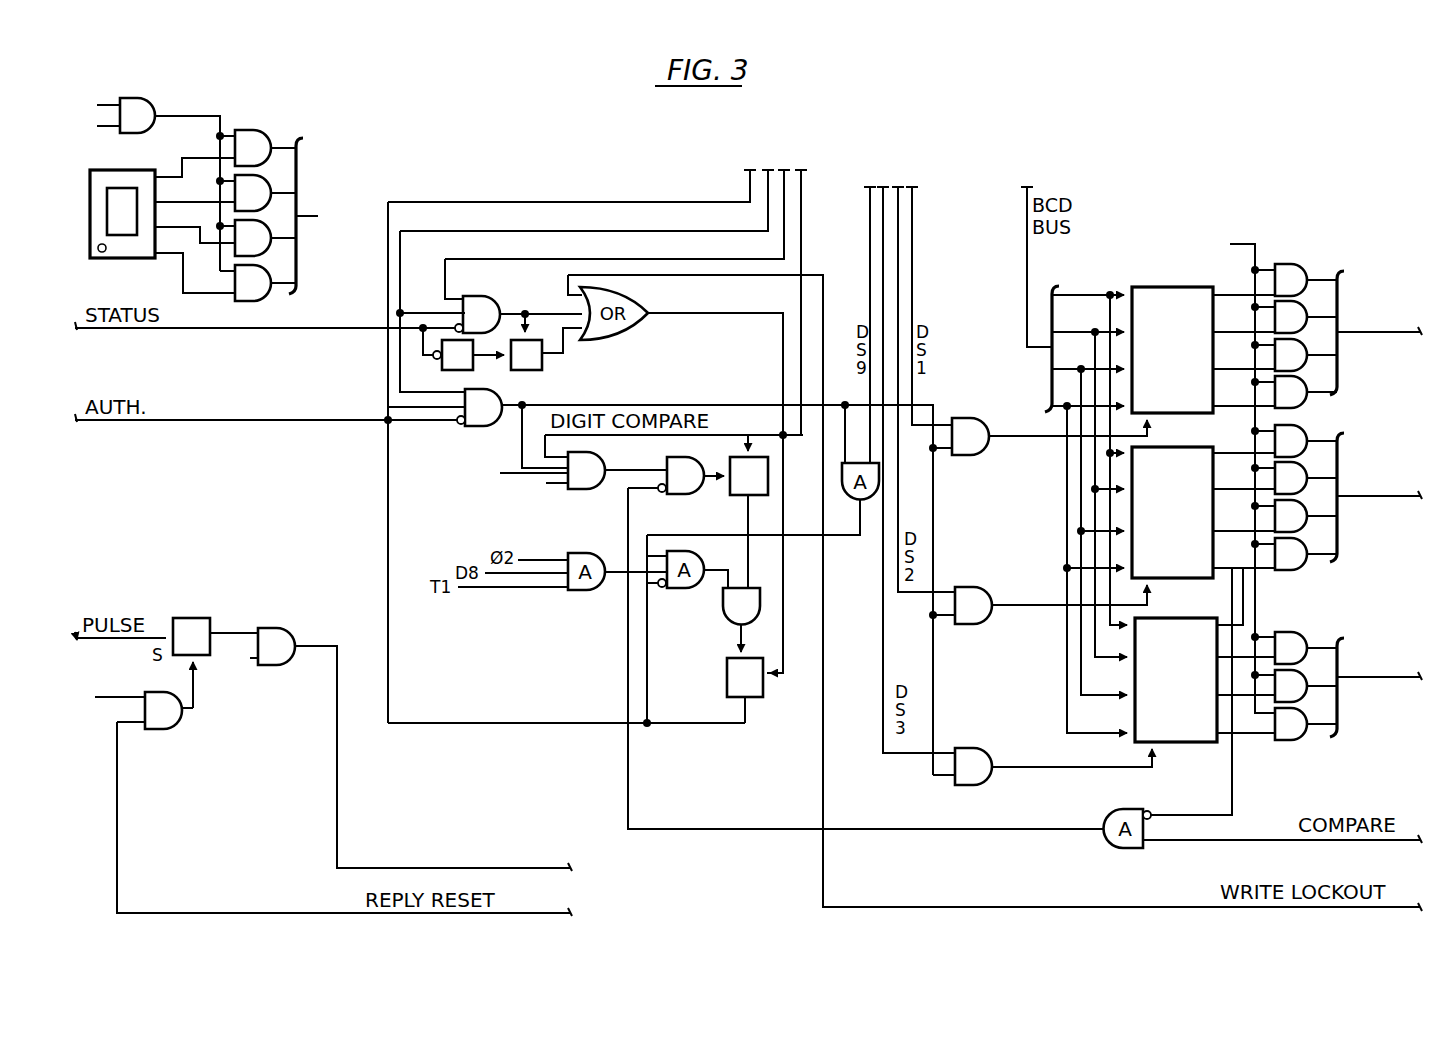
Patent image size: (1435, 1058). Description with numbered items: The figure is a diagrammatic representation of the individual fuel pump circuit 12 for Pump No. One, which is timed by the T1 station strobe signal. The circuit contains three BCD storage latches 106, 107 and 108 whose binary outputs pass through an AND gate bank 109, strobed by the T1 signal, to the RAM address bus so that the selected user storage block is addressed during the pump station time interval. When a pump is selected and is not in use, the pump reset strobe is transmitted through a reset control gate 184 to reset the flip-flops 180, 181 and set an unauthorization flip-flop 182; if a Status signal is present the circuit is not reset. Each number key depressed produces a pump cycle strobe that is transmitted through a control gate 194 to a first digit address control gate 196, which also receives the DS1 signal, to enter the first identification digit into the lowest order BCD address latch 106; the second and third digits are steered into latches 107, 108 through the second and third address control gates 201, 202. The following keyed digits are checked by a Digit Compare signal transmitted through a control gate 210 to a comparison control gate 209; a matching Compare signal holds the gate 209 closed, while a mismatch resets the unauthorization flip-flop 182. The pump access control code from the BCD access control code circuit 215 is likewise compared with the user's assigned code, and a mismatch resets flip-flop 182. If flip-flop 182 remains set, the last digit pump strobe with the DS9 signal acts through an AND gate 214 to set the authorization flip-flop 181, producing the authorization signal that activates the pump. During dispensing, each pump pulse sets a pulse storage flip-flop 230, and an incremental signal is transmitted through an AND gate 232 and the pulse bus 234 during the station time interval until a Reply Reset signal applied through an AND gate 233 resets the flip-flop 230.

The pump circuit 12 is at (451, 165).
The first BCD address latch 106 is at (1185, 274).
The second BCD address latch 107 is at (1190, 478).
The third BCD address latch 108 is at (1194, 649).
The AND gate bank 109 is at (1288, 256).
The flip-flop 180 is at (542, 366).
The authorization flip-flop 181 is at (727, 674).
The unauthorization flip-flop 182 is at (736, 498).
The reset control gate 184 is at (496, 296).
The control gate 194 is at (483, 427).
The first digit address control gate 196 is at (965, 418).
The second address control gate 201 is at (965, 587).
The third address control gate 202 is at (968, 748).
The comparison control gate 209 is at (685, 467).
The control gate 210 is at (602, 467).
The AND gate 214 is at (722, 622).
The BCD access control code circuit 215 is at (296, 127).
The pulse storage flip-flop 230 is at (177, 617).
The AND gate 232 is at (265, 628).
The AND gate 233 is at (152, 731).
The pulse bus 234 is at (505, 868).